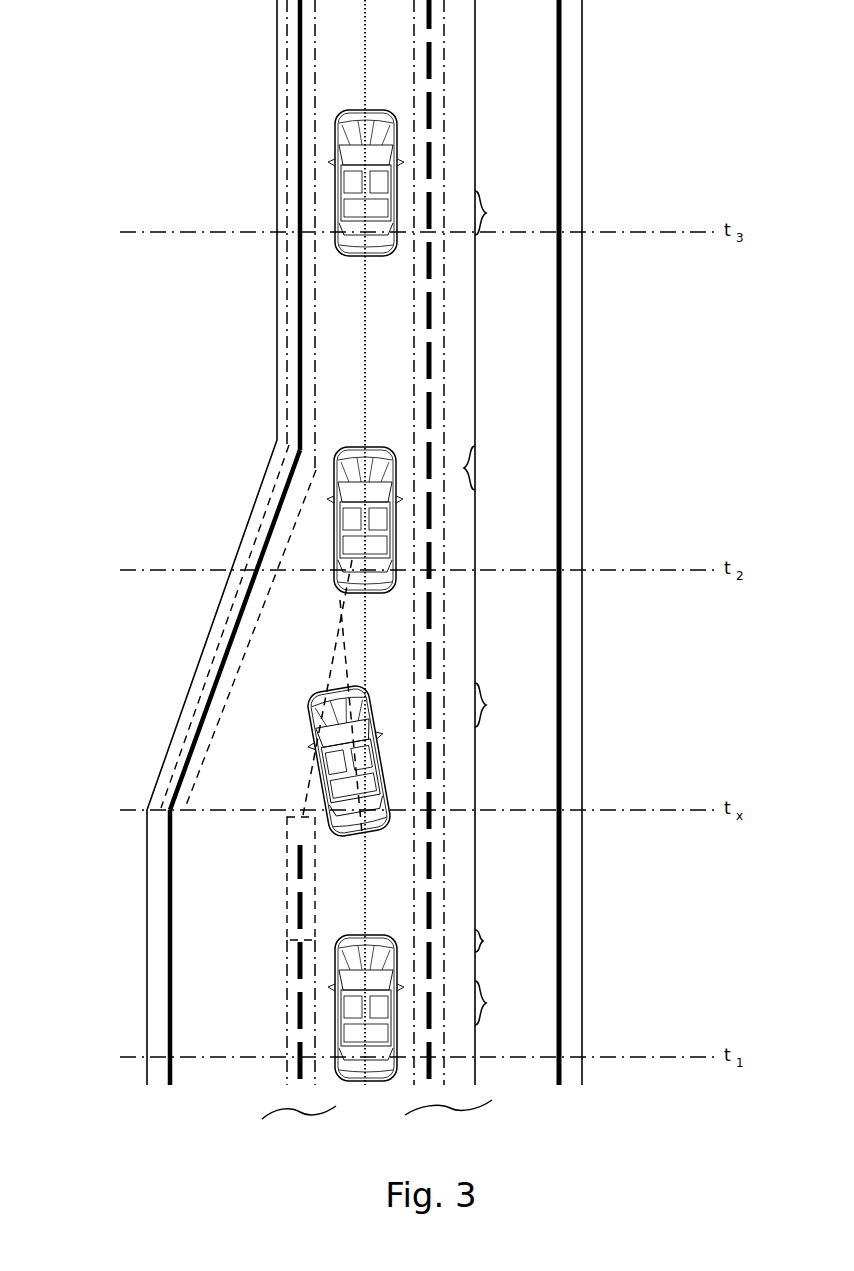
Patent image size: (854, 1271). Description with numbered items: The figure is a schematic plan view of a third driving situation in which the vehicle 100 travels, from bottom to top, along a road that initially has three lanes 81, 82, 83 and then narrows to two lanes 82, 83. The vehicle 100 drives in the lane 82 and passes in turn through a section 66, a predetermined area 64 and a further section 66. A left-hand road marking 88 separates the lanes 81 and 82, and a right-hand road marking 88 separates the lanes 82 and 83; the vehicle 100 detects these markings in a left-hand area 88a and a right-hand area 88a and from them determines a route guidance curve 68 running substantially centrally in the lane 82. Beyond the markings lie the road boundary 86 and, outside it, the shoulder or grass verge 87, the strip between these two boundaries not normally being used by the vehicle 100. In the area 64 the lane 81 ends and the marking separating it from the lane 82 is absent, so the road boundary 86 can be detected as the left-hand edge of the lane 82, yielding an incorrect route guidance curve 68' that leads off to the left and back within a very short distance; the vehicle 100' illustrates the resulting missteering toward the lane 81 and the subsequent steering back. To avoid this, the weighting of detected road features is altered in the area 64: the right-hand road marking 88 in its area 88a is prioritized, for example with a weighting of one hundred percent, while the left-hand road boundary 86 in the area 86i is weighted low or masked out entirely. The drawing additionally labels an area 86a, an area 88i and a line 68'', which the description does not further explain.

The predetermined area 64 is at (497, 705).
The section 66 is at (491, 542).
The route guidance curve 68 is at (297, 542).
The route guidance curve 68' is at (254, 687).
The vehicle heading axis 68'' is at (300, 716).
The lane 81 is at (281, 1046).
The lane 82 is at (433, 1000).
The lane 83 is at (499, 935).
The road boundary 86 is at (558, 525).
The straight portion of road marking 86a is at (288, 333).
The area 86i is at (210, 657).
The grass verge 87 is at (582, 855).
The road marking 88 is at (432, 60).
The area 88a is at (445, 370).
The lane marking segment region 88i is at (287, 873).
The vehicle 100 is at (307, 595).
The vehicle 100' is at (314, 761).